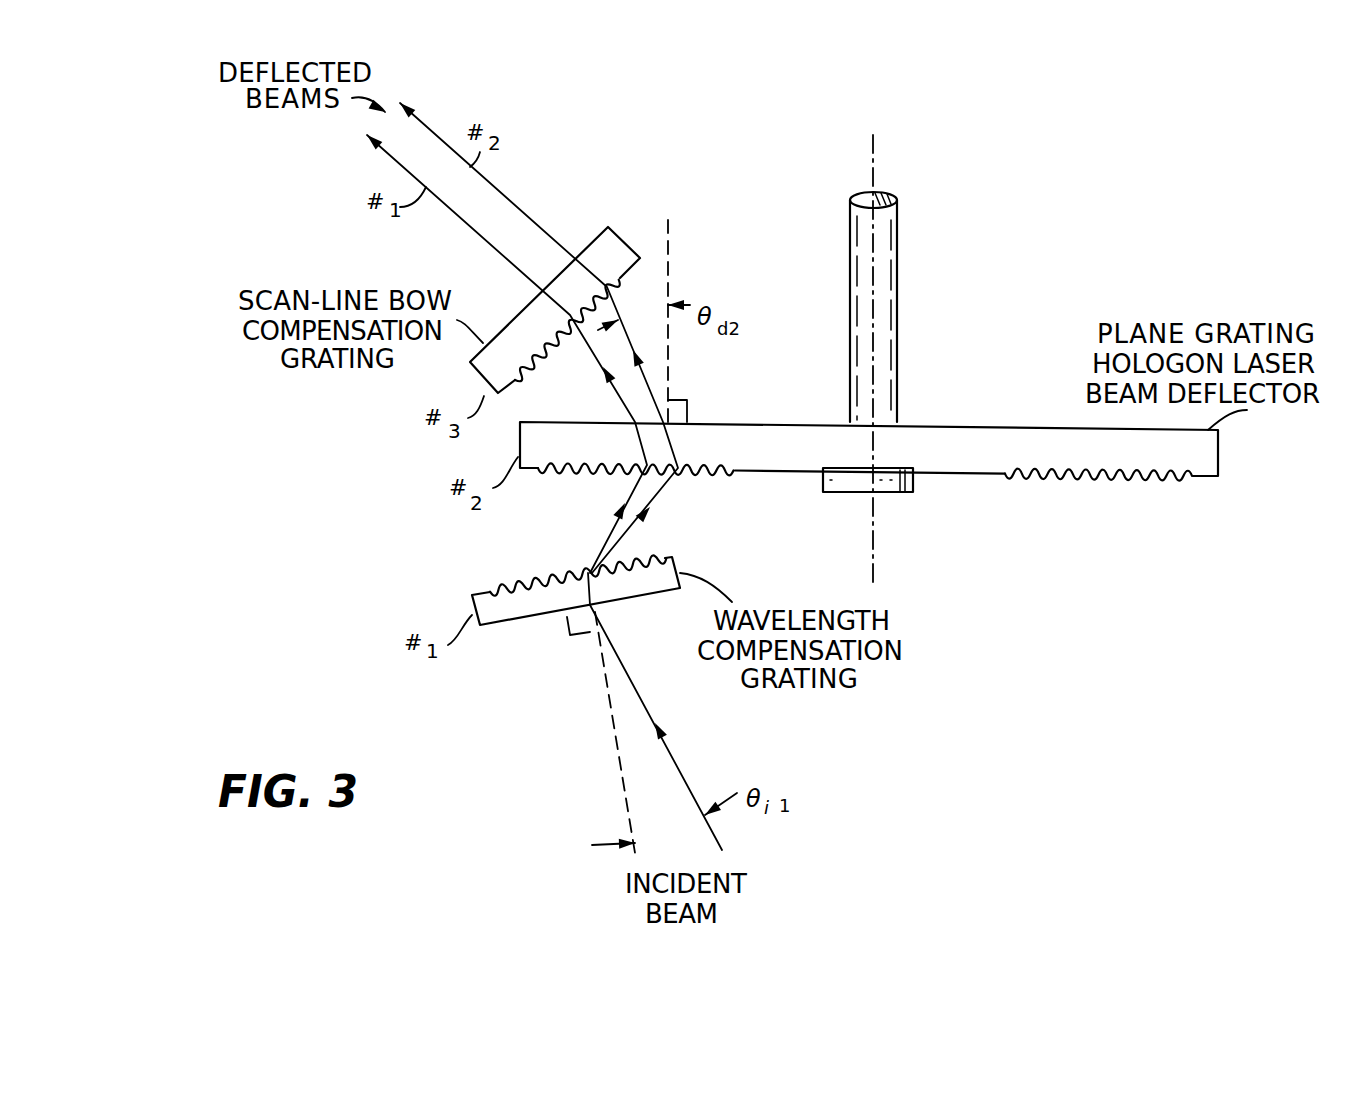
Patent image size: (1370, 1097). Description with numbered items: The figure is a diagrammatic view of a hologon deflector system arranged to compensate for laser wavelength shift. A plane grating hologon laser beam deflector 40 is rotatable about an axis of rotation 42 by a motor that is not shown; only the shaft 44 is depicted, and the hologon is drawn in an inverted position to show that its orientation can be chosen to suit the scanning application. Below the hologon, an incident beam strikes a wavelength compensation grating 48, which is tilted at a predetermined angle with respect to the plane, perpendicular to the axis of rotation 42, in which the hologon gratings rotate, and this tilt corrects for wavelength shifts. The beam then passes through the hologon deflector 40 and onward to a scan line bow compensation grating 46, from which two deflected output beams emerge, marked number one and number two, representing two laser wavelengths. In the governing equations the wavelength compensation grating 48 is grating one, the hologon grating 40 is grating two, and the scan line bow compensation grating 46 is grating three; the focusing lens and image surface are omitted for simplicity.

The plane grating hologon laser beam deflector 40 is at (1218, 462).
The axis of rotation 42 is at (873, 166).
The shaft 44 is at (897, 315).
The scan line bow compensation grating 46 is at (608, 227).
The wavelength compensation grating 48 is at (488, 627).